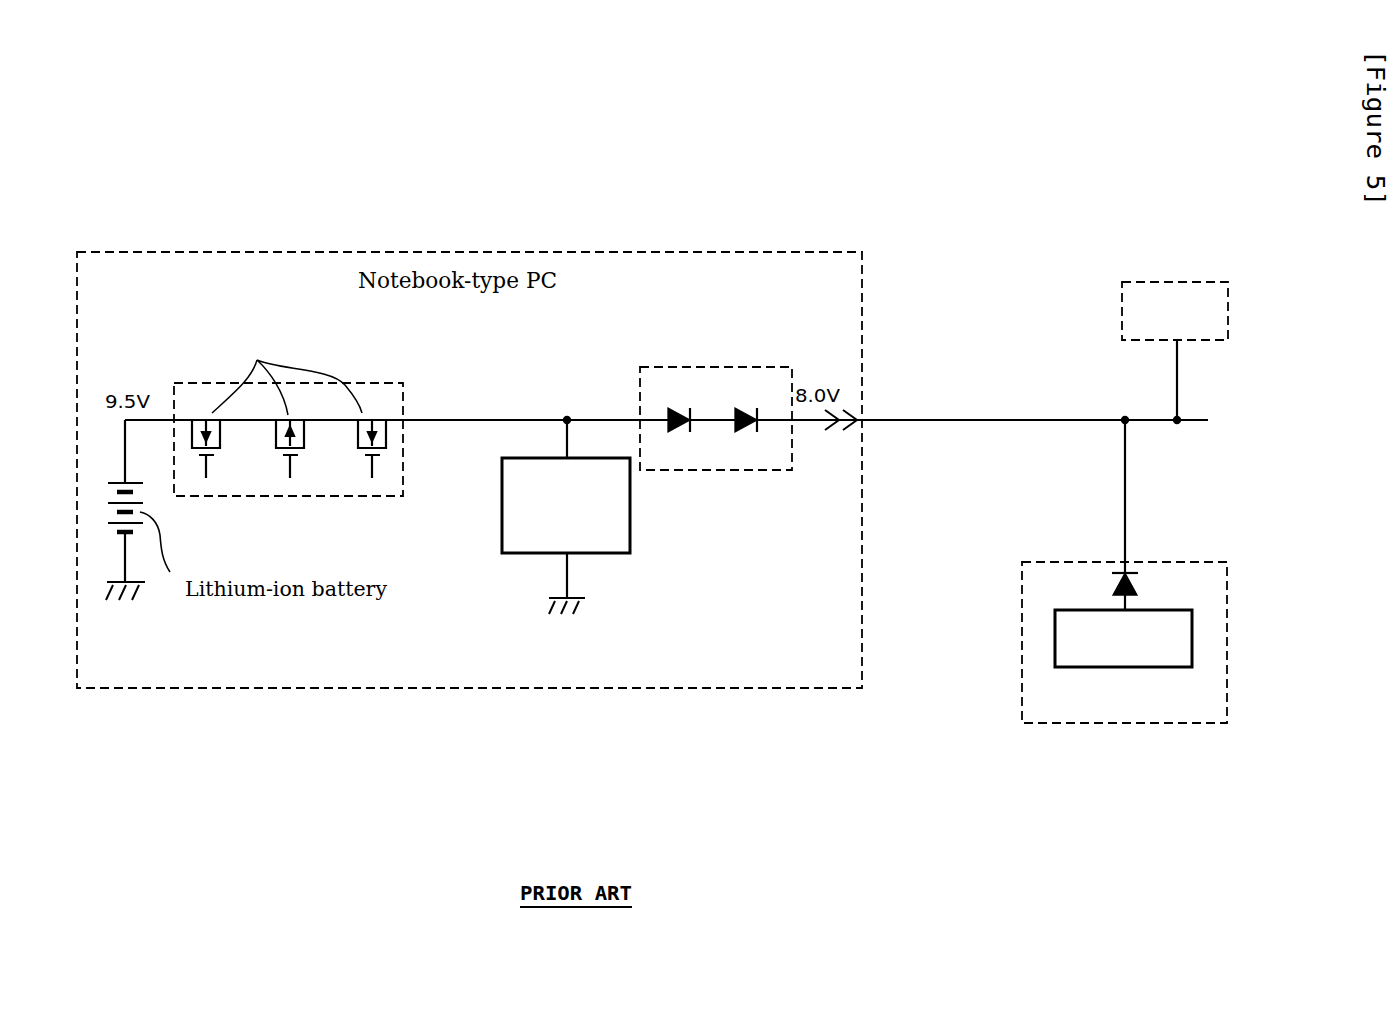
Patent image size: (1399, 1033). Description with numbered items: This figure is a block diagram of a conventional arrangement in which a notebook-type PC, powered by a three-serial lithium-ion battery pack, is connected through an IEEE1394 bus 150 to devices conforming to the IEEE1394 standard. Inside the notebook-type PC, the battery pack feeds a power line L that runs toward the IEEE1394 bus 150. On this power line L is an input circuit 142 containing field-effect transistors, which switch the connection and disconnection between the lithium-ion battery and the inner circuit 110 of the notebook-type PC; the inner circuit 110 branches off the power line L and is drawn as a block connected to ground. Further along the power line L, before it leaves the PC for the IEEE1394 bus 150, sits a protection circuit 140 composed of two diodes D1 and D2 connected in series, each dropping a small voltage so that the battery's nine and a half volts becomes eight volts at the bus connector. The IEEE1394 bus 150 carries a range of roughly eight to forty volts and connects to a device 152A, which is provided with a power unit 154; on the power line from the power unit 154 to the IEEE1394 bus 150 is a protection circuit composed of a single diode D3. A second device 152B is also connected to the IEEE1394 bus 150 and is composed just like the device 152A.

The inner circuit 110 is at (632, 527).
The protection circuit 140 is at (716, 391).
The input circuit 142 is at (362, 383).
The IEEE1394 bus 150 is at (1032, 420).
The device 152A is at (1152, 602).
The device 152B is at (1143, 282).
The power unit 154 is at (1192, 646).
The diode D1 is at (675, 418).
The diode D2 is at (746, 418).
The diode D3 is at (1140, 586).
The power line L is at (464, 420).